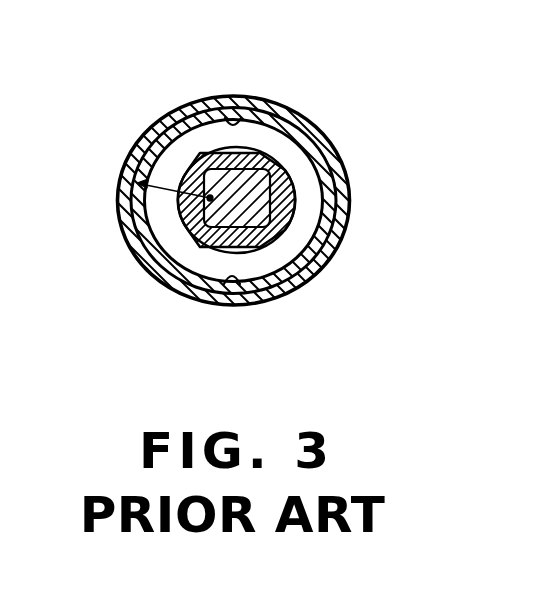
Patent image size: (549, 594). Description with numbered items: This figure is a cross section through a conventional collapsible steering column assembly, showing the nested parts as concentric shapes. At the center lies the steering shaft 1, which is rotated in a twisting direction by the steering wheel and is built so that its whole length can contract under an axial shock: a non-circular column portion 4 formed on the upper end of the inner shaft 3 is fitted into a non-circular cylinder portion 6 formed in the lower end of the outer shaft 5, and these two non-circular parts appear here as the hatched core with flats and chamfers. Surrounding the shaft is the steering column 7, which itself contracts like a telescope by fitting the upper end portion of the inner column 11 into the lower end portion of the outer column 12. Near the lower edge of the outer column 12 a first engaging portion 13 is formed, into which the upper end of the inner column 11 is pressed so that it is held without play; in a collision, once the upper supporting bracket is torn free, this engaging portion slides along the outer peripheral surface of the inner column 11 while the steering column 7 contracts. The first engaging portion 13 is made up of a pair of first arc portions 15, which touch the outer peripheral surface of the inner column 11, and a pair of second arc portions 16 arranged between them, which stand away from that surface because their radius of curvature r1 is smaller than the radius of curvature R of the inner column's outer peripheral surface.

The steering shaft 1 is at (247, 149).
The inner shaft 3 is at (251, 222).
The non-circular column portion 4 is at (303, 264).
The outer shaft 5 is at (233, 200).
The non-circular cylinder portion 6 is at (341, 247).
The steering column 7 is at (179, 99).
The inner column 11 is at (347, 188).
The outer column 12 is at (357, 173).
The first engaging portion 13 is at (338, 157).
The first arc portions 15 is at (237, 97).
The second arc portions 16 is at (343, 217).
The radius of curvature of the outer peripheral surface of the inner column R is at (158, 279).
The radius of curvature of the second arc portions r1 is at (150, 142).